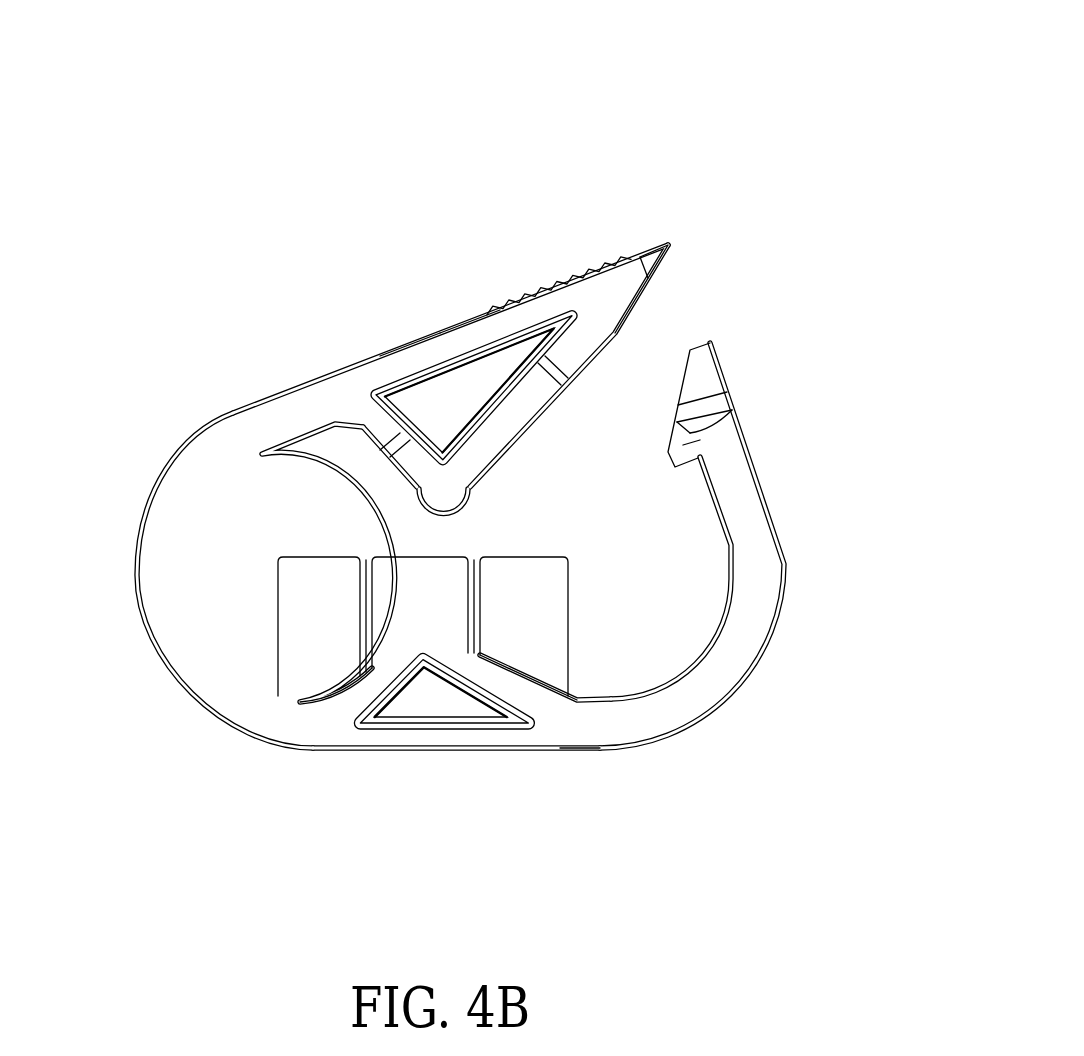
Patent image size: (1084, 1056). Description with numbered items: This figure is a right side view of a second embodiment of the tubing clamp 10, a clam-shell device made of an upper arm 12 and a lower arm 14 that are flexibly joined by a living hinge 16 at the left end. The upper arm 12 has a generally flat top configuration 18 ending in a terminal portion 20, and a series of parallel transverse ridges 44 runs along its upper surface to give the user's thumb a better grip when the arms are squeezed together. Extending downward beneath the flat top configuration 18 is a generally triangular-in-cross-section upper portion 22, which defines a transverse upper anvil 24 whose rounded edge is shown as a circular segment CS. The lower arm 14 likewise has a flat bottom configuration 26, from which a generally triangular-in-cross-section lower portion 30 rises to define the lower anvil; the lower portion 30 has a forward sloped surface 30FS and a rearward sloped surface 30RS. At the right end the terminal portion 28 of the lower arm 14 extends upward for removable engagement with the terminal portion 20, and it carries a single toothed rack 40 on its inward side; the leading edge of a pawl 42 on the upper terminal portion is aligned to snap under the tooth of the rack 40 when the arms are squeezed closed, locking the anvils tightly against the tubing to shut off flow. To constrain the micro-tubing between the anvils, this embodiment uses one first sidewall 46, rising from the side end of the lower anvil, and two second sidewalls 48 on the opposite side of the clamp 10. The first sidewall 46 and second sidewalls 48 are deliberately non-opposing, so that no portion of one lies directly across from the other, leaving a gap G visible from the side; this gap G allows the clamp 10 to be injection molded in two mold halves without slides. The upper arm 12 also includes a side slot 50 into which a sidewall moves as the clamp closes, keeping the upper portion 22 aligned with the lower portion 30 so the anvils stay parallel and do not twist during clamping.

The tubing clamp 10 is at (496, 451).
The upper arm 12 is at (324, 349).
The lower arm 14 is at (523, 775).
The living hinge 16 is at (177, 417).
The flat top configuration 18 is at (407, 347).
The terminal portion 20 is at (640, 257).
The upper portion 22 is at (460, 333).
The upper anvil 24 is at (446, 488).
The flat bottom configuration 26 is at (607, 749).
The terminal portion 28 is at (760, 493).
The lower portion 30 is at (370, 748).
The forward sloped surface 30FS is at (578, 698).
The rearward sloped surface 30RS is at (345, 687).
The toothed rack 40 is at (740, 407).
The pawl 42 is at (650, 278).
The transverse ridges 44 is at (578, 277).
The first sidewall 46 is at (420, 612).
The second sidewall 48 is at (423, 626).
The first side slot 50 is at (523, 417).
The circular segment CS is at (437, 513).
The gap G is at (361, 567).